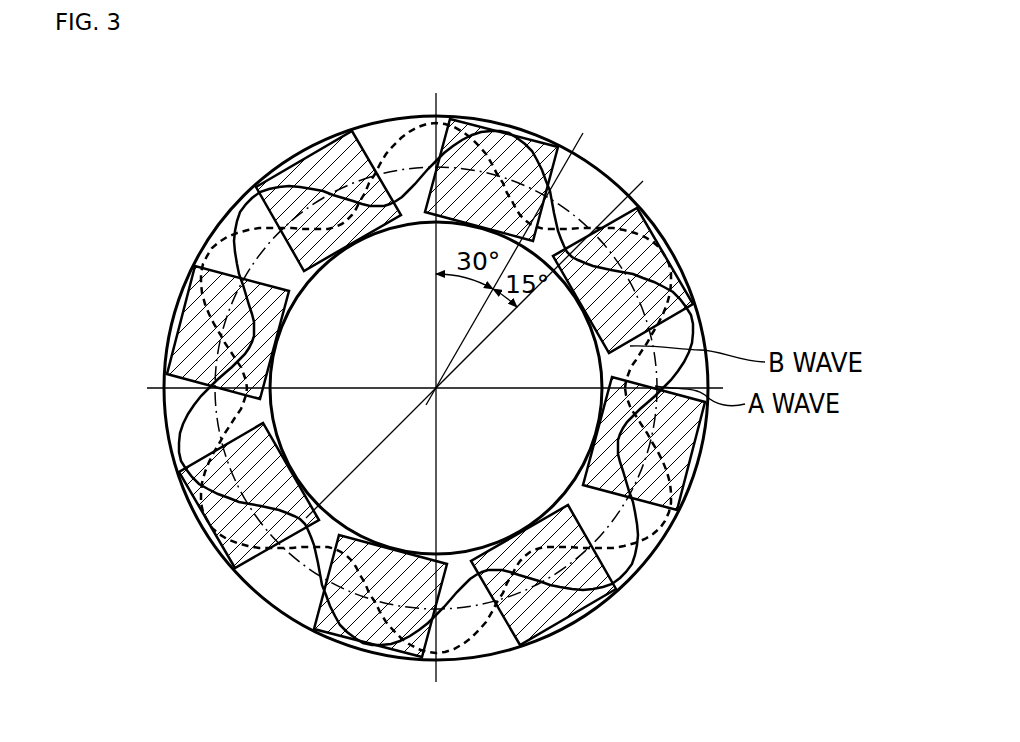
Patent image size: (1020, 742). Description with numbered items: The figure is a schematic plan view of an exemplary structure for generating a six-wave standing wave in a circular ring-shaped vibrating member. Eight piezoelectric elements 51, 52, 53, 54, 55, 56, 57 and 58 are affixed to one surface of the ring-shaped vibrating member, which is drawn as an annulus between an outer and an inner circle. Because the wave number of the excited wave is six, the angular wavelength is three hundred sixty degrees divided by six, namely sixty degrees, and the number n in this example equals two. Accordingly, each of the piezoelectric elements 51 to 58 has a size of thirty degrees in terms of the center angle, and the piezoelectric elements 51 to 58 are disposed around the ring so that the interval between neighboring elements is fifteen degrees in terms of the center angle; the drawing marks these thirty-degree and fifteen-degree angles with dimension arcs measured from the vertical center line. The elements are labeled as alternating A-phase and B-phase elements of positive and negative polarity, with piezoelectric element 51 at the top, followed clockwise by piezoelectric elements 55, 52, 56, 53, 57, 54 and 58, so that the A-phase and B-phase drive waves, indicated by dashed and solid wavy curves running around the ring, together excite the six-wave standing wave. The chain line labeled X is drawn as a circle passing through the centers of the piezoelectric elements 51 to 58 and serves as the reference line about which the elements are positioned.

The center line of magnetic pole pieces X is at (412, 167).
The piezoelectric element 51 is at (522, 125).
The piezoelectric element 52 is at (702, 478).
The piezoelectric element 53 is at (350, 650).
The piezoelectric element 54 is at (183, 307).
The piezoelectric element 55 is at (676, 262).
The piezoelectric element 56 is at (585, 612).
The piezoelectric element 57 is at (190, 503).
The piezoelectric element 58 is at (323, 143).